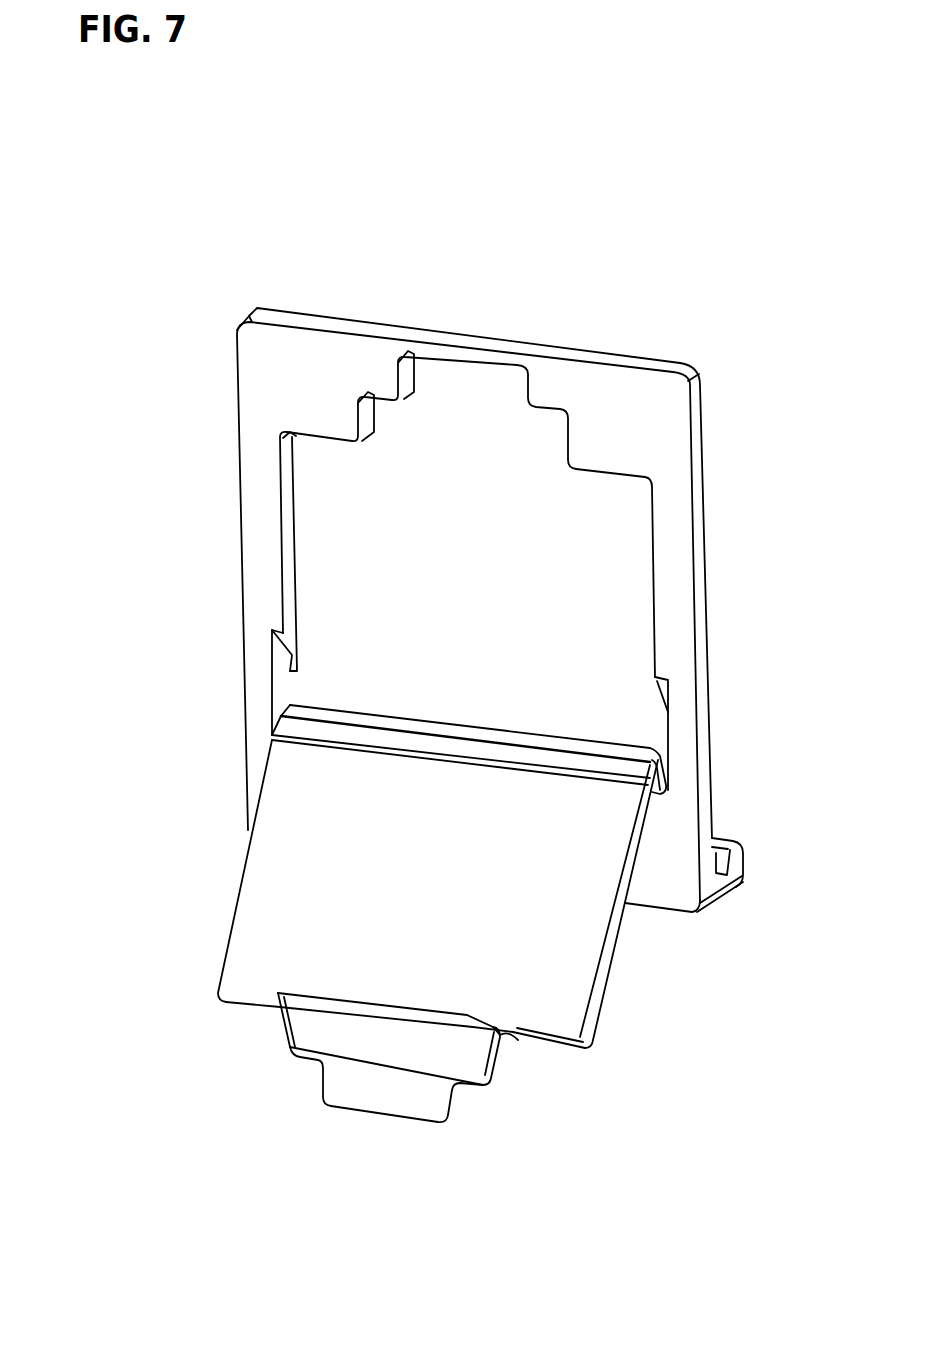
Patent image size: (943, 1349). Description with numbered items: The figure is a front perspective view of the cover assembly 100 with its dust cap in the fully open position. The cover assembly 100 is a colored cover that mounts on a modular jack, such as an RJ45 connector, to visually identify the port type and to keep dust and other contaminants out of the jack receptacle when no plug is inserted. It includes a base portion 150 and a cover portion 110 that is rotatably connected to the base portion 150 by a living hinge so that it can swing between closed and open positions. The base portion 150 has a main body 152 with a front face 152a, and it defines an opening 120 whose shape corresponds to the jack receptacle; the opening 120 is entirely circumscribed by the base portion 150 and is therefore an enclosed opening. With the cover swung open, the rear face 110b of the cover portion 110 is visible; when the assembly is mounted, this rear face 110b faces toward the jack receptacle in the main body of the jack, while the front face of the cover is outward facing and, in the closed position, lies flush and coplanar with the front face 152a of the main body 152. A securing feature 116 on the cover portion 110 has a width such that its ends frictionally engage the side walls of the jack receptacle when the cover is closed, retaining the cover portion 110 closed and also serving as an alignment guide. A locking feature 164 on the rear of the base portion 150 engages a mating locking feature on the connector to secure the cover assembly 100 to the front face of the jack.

The cover assembly 100 is at (152, 351).
The cover portion 110 is at (560, 1005).
The rear face 110b is at (243, 963).
The securing feature 116 is at (440, 1048).
The opening 120 is at (617, 642).
The base portion 150 is at (673, 890).
The main body 152 is at (253, 668).
The front face 152a is at (255, 532).
The locking feature 164 is at (733, 857).